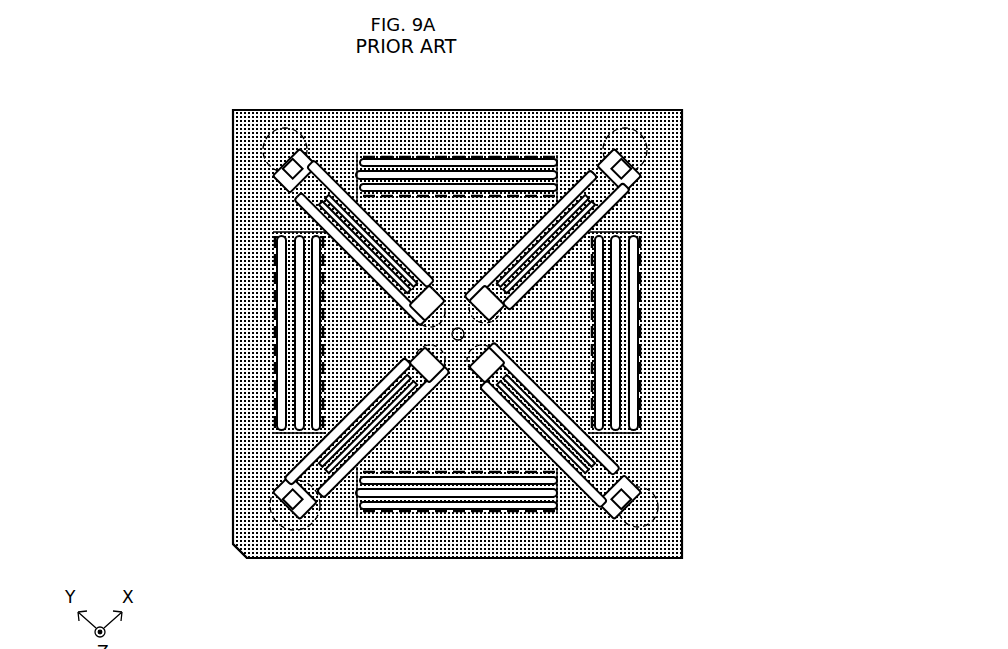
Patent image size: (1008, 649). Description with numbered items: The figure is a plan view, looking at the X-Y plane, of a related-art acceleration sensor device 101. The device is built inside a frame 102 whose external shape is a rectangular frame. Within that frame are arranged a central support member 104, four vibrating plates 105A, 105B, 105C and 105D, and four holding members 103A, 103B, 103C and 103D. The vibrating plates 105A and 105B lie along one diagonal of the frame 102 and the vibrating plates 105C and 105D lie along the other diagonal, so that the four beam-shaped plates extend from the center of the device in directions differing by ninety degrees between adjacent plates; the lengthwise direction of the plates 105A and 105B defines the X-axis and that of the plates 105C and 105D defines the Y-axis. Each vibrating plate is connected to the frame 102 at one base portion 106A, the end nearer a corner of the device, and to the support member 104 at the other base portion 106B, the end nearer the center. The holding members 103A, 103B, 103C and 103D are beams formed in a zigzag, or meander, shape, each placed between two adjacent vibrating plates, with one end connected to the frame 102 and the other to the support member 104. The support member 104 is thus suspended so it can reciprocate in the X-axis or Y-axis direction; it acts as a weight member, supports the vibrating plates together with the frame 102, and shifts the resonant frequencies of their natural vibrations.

The acceleration sensor device 101 is at (773, 102).
The frame 102 is at (638, 552).
The holding member 103A is at (280, 232).
The holding member 103B is at (650, 405).
The holding member 103C is at (528, 497).
The holding member 103D is at (478, 285).
The support member 104 is at (463, 348).
The vibrating plate 105A is at (350, 520).
The vibrating plate 105B is at (619, 150).
The vibrating plate 105C is at (648, 490).
The vibrating plate 105D is at (303, 150).
The base portion 106A is at (270, 130).
The base portion 106B is at (470, 292).